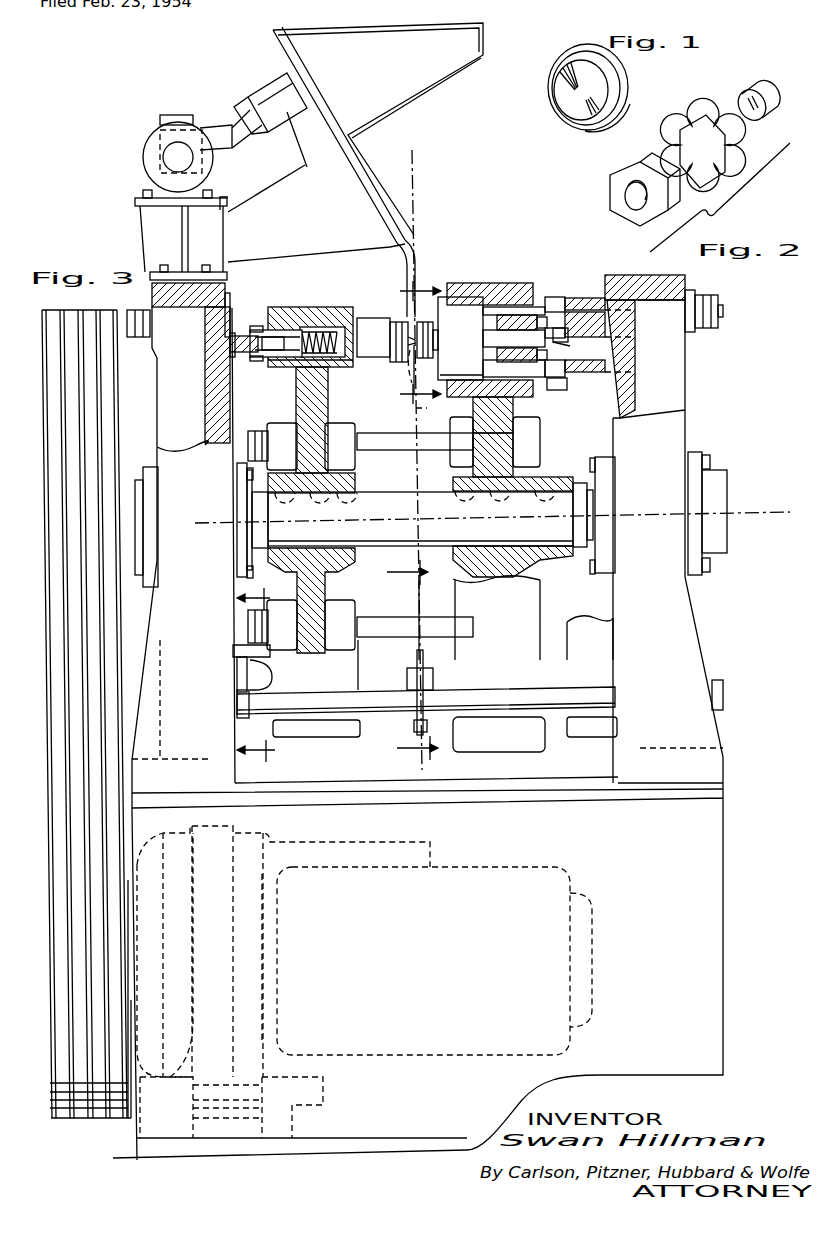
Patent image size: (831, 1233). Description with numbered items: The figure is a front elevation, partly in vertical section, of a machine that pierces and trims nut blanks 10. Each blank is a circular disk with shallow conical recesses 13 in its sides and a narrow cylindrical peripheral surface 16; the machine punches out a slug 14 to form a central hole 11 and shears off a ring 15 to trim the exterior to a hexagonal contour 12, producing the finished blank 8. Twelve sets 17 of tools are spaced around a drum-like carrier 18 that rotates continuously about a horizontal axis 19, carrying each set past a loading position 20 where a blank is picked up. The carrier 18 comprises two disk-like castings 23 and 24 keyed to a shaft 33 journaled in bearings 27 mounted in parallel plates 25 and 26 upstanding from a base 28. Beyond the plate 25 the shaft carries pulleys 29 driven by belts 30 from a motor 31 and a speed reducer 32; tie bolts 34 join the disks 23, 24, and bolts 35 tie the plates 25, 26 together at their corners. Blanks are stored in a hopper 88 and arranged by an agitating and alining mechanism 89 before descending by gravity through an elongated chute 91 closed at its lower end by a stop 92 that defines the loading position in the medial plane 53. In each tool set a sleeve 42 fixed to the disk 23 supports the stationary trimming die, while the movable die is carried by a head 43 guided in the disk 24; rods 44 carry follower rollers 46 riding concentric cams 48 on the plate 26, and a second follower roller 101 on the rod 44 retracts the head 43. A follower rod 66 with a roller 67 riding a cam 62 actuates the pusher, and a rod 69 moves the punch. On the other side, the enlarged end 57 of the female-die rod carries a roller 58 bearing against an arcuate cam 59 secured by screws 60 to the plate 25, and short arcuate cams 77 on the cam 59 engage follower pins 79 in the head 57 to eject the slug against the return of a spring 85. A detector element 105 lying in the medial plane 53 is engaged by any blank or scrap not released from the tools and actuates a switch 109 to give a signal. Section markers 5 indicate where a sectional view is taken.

In FIG. 3, the section line 5- 5 is at (420, 342).
In FIG. 2, the finished blank 8 is at (608, 202).
In FIG. 1, the nut blank 10 is at (613, 68).
In FIG. 2, the hole 11 is at (628, 206).
In FIG. 2, the hexagonal contour 12 is at (616, 170).
In FIG. 1, the conical recesses 13 is at (572, 100).
In FIG. 2, the slug 14 is at (776, 112).
In FIG. 2, the ring 15 is at (716, 118).
In FIG. 1, the cylindrical peripheral surface 16 is at (620, 92).
In FIG. 3, the sets of tools 17 is at (402, 368).
In FIG. 3, the drum-like carrier 18 is at (498, 280).
In FIG. 3, the axis 19 is at (750, 506).
In FIG. 3, the loading position 20 is at (240, 675).
In FIG. 3, the carrier disk 23 is at (272, 413).
In FIG. 3, the carrier disk 24 is at (548, 477).
In FIG. 3, the frame plate 25 is at (162, 442).
In FIG. 3, the frame plate 26 is at (683, 430).
In FIG. 3, the bearings 27 is at (152, 595).
In FIG. 3, the base 28 is at (727, 815).
In FIG. 3, the pulleys 29 is at (47, 650).
In FIG. 3, the belts 30 is at (50, 762).
In FIG. 3, the motor 31 is at (483, 870).
In FIG. 3, the speed reducer 32 is at (266, 846).
In FIG. 3, the shaft 33 is at (434, 494).
In FIG. 3, the tie bolts 34 is at (386, 433).
In FIG. 3, the bolts 35 is at (508, 716).
In FIG. 3, the second sleeve 42 is at (385, 332).
In FIG. 3, the die head 43 is at (458, 300).
In FIG. 3, the follower rods 44 is at (535, 284).
In FIG. 3, the follower rollers 46 is at (552, 297).
In FIG. 3, the concentric cams 48 is at (580, 297).
In FIG. 3, the medial plane 53 is at (432, 412).
In FIG. 3, the enlarged outer end 57 is at (280, 365).
In FIG. 3, the roller 58 is at (285, 337).
In FIG. 3, the arcuate cam 59 is at (257, 326).
In FIG. 3, the screws 60 is at (208, 360).
In FIG. 3, the cam 62 is at (575, 311).
In FIG. 3, the follower rod 66 is at (490, 324).
In FIG. 3, the roller 67 is at (558, 342).
In FIG. 3, the rod 69 is at (490, 344).
In FIG. 3, the short arcuate cams 77 is at (252, 675).
In FIG. 3, the follower pins 79 is at (258, 330).
In FIG. 3, the spring 85 is at (330, 330).
In FIG. 3, the hopper 88 is at (428, 90).
In FIG. 3, the agitating and alining mechanism 89 is at (178, 116).
In FIG. 3, the chute 91 is at (418, 278).
In FIG. 3, the stop 92 is at (403, 371).
In FIG. 3, the second follower roller 101 is at (558, 390).
In FIG. 3, the detector element 105 is at (401, 620).
In FIG. 3, the switch 109 is at (410, 682).